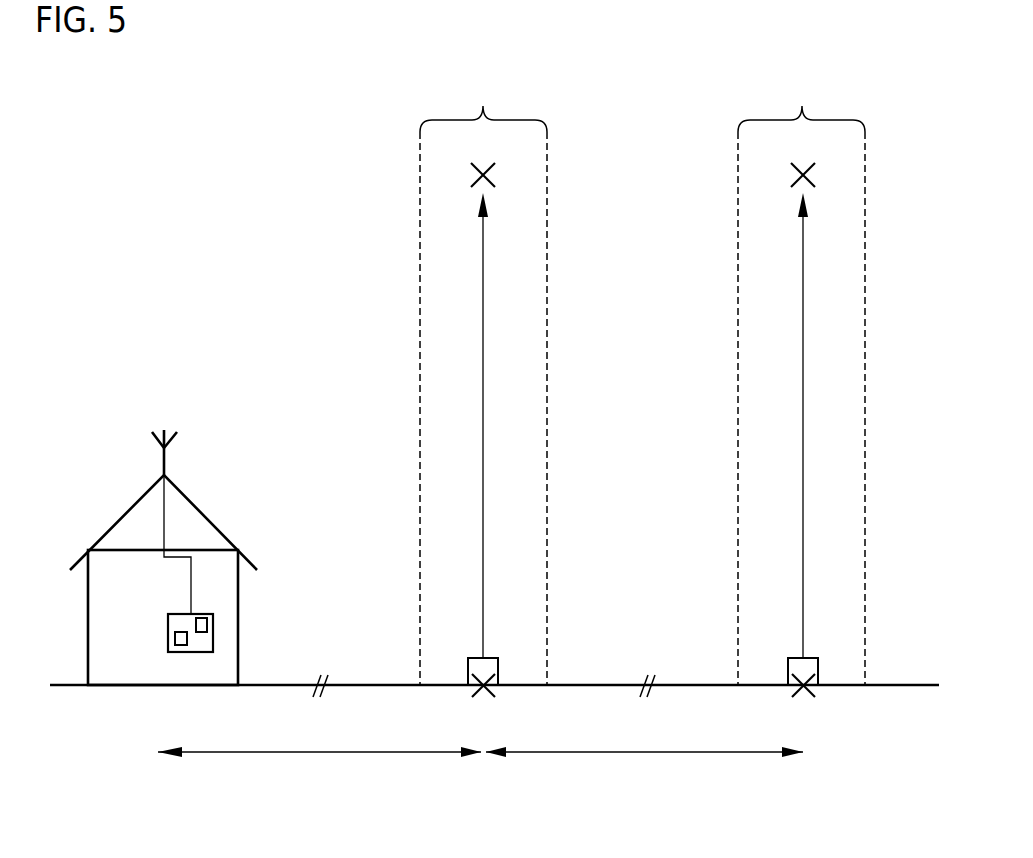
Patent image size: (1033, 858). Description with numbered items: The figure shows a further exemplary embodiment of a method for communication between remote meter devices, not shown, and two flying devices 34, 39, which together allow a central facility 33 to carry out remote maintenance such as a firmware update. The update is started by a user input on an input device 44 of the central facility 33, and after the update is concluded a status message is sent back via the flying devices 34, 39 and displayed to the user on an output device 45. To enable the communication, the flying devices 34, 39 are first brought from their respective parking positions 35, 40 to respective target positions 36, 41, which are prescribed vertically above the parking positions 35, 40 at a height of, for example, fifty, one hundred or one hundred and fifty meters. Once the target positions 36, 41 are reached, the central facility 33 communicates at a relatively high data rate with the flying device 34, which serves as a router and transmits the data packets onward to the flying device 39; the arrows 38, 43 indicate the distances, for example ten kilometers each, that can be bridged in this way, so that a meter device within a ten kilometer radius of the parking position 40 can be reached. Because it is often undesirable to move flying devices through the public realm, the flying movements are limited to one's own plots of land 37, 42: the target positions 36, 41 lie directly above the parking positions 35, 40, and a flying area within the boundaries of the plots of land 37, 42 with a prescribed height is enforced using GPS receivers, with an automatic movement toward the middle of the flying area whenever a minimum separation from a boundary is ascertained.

The central facility 33 is at (152, 632).
The flying device 34 is at (488, 657).
The parking position 35 is at (485, 689).
The target position 36 is at (488, 175).
The plot of land 37 is at (483, 377).
The arrow 38 is at (335, 752).
The flying device 39 is at (808, 657).
The parking position 40 is at (803, 693).
The target position 41 is at (808, 172).
The plot of land 42 is at (801, 377).
The arrow 43 is at (642, 752).
The input device 44 is at (179, 627).
The output device 45 is at (201, 615).